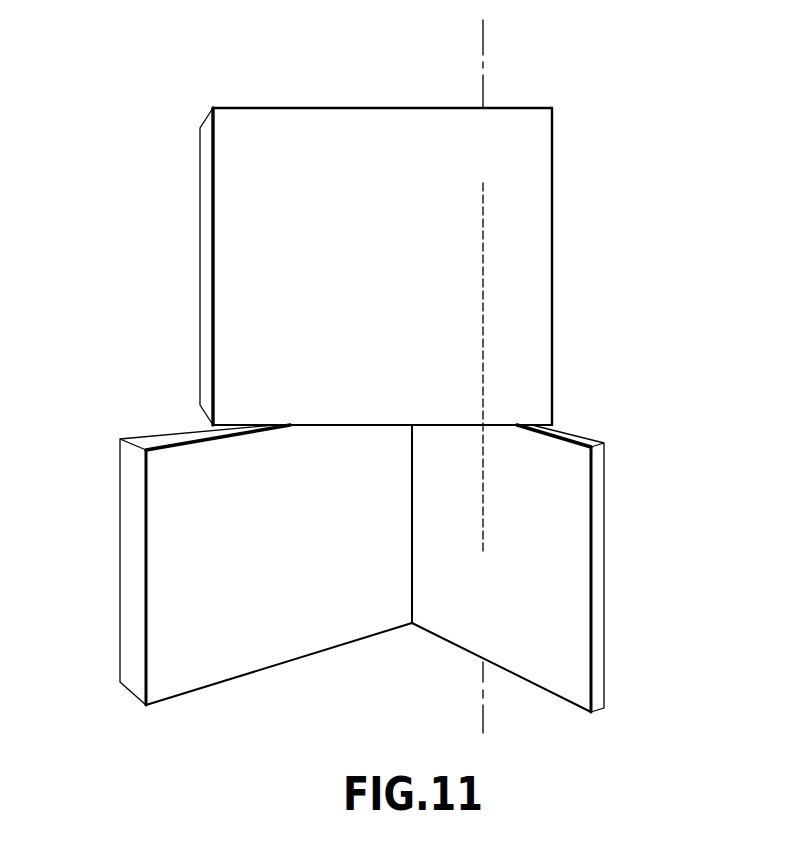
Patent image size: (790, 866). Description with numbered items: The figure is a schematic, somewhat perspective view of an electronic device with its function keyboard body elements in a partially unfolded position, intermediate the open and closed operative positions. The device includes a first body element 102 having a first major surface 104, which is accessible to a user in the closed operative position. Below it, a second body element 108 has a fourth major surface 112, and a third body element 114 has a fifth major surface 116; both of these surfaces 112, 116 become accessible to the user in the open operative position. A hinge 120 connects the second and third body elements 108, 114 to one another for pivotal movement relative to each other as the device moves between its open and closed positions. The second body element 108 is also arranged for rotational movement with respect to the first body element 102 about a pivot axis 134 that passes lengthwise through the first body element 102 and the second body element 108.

The first body element 102 is at (552, 210).
The first major surface 104 is at (383, 258).
The second body element 108 is at (605, 465).
The fourth major surface 112 is at (528, 589).
The third body element 114 is at (117, 497).
The fifth major surface 116 is at (310, 560).
The hinge 120 is at (412, 630).
The pivot axis 134 is at (483, 37).